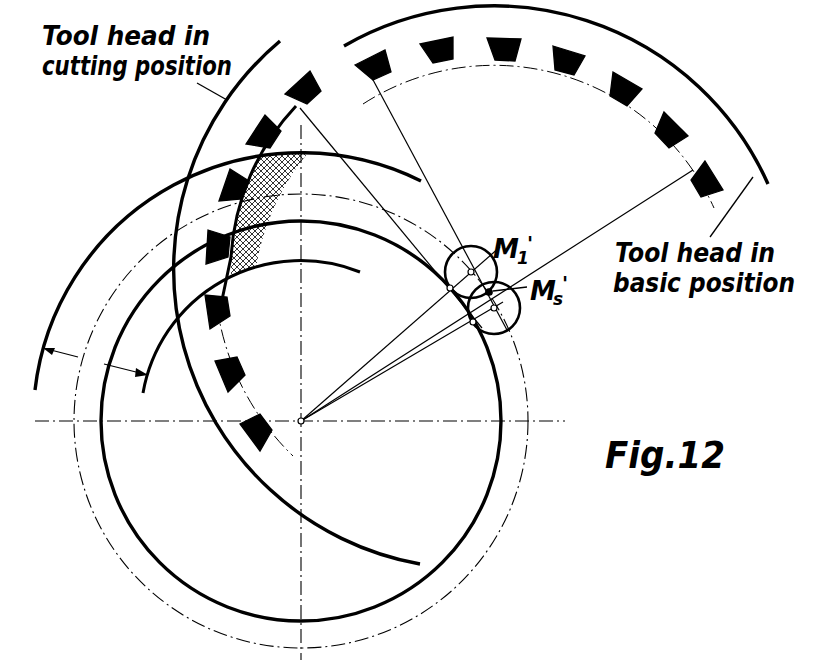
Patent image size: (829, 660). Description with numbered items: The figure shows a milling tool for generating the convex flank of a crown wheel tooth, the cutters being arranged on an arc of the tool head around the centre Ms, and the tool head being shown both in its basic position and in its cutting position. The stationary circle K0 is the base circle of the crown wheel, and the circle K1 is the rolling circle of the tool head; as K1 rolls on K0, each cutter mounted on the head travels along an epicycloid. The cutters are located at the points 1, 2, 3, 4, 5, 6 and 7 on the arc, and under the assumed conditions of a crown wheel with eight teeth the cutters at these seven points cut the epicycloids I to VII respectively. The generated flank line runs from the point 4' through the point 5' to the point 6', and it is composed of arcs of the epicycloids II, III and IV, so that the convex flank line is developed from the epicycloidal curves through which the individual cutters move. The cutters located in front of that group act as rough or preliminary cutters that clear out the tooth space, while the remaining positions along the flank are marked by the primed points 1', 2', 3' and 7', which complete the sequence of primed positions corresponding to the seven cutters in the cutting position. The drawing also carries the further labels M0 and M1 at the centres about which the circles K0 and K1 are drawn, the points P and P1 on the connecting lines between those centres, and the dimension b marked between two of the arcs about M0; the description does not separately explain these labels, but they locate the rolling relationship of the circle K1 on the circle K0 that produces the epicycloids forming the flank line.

The cutter point 1 is at (372, 58).
The cutter point 2 is at (432, 41).
The cutter point 3 is at (500, 36).
The cutter point 4 is at (564, 47).
The cutter point 5 is at (624, 75).
The cutter point 6 is at (671, 116).
The cutter point 7 is at (707, 168).
The cutting blade 1 (cutting position) 1' is at (258, 446).
The cutting blade 2 (cutting position) 2' is at (225, 387).
The cutting blade 3 (cutting position) 3' is at (207, 326).
The flank line end point 4' is at (205, 259).
The flank line point 5' is at (223, 196).
The flank line end point 6' is at (253, 136).
The cutting blade 7 (cutting position) 7' is at (293, 86).
The base circle of the crown wheel K0 is at (494, 468).
The rolling circle of the tool head K1 is at (514, 329).
The gear blank center M0 is at (322, 436).
The tool head center (basic position) M1 is at (519, 309).
The pitch point (basic position) P is at (465, 335).
The pitch point (cutting position) P1 is at (453, 307).
The tooth depth b is at (95, 362).